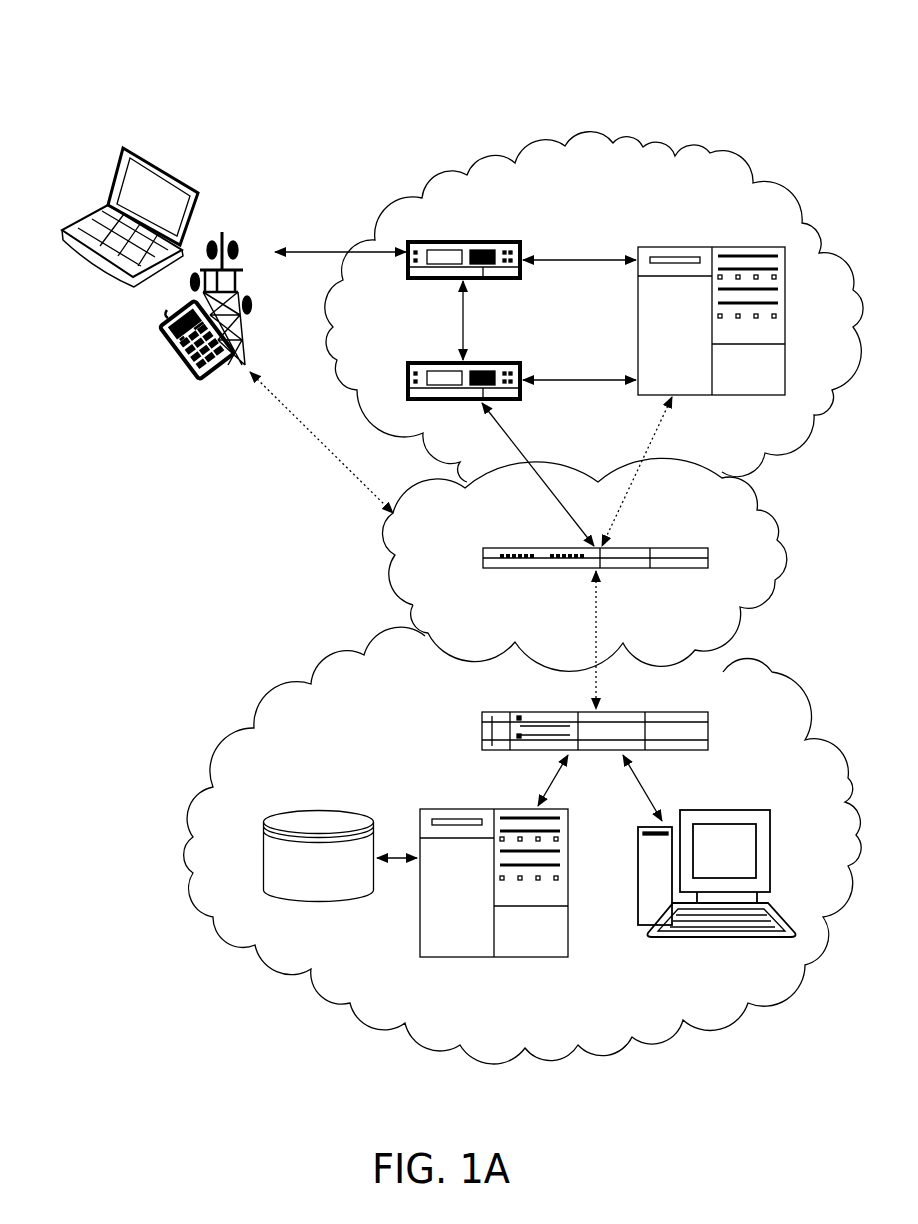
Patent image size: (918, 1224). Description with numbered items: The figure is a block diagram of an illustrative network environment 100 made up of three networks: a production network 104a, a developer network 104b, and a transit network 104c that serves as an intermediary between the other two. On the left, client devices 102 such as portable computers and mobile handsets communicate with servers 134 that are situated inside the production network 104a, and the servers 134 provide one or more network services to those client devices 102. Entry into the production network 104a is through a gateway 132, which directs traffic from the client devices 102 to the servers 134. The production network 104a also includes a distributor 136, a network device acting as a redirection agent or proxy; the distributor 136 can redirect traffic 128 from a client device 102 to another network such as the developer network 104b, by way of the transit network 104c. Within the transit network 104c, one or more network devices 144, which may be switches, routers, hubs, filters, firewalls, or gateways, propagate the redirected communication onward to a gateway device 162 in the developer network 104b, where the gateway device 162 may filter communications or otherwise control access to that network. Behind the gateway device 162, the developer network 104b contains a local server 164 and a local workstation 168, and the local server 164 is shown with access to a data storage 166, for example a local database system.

The network environment 100 is at (150, 48).
The client devices 102 is at (157, 264).
The production network 104a is at (710, 153).
The developer network 104b is at (772, 672).
The transit network 104c is at (757, 511).
The traffic 128 is at (337, 458).
The gateway 132 is at (464, 244).
The servers 134 is at (711, 305).
The distributor 136 is at (453, 367).
The network devices 144 is at (569, 554).
The gateway device 162 is at (567, 729).
The local server 164 is at (494, 901).
The data storage 166 is at (319, 874).
The local workstation 168 is at (717, 891).